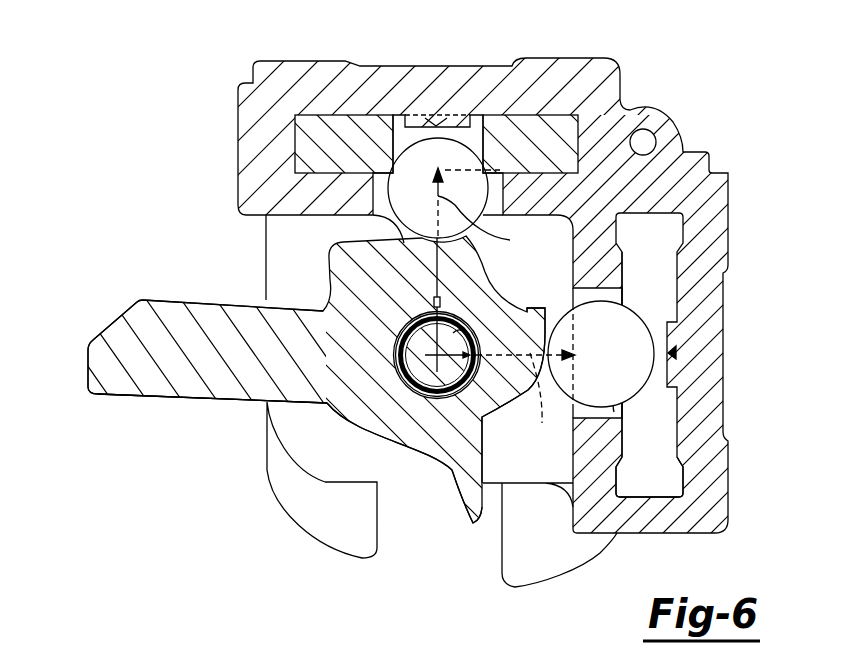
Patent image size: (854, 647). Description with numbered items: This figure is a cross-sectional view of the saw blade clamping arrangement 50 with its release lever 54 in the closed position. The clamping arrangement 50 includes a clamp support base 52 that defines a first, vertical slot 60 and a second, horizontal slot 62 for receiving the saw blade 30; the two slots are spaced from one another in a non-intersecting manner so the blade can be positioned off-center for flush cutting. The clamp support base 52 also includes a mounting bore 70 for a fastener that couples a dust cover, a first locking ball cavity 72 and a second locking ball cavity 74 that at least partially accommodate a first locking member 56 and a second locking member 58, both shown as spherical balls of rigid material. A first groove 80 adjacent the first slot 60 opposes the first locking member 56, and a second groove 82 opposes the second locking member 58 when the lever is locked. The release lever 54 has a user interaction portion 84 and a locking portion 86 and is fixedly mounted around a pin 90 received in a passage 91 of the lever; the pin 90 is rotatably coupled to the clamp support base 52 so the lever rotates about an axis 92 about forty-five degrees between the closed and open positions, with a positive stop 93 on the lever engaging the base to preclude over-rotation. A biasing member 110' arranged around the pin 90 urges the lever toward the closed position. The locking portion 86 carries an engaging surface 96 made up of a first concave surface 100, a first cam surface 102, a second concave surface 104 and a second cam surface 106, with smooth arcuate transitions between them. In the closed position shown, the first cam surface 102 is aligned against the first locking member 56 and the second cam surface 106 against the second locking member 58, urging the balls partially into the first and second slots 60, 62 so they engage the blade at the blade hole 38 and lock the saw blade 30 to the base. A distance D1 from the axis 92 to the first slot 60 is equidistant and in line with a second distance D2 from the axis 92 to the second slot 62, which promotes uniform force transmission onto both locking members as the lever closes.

The saw blade 30 is at (580, 137).
The blade hole 38 is at (490, 152).
The clamping arrangement 50 is at (132, 104).
The clamp support base 52 is at (300, 75).
The release lever 54 is at (108, 326).
The first locking member 56 is at (643, 320).
The second locking member 58 is at (405, 143).
The first slot 60 is at (672, 443).
The second slot 62 is at (548, 125).
The mounting bore 70 is at (663, 141).
The first locking ball cavity 72 is at (625, 392).
The second locking ball cavity 74 is at (413, 190).
The first groove 80 is at (673, 344).
The second groove 82 is at (432, 116).
The user interaction portion 84 is at (178, 382).
The locking portion 86 is at (455, 477).
The pin 90 is at (413, 358).
The passage 91 is at (458, 332).
The axis 92 is at (417, 408).
The positive stop 93 is at (473, 521).
The engaging surface 96 is at (542, 303).
The first concave surface 100 is at (492, 410).
The first cam surface 102 is at (550, 348).
The second concave surface 104 is at (522, 303).
The second cam surface 106 is at (436, 237).
The biasing member 110' is at (387, 338).
The distance D1 is at (544, 402).
The second distance D2 is at (486, 226).